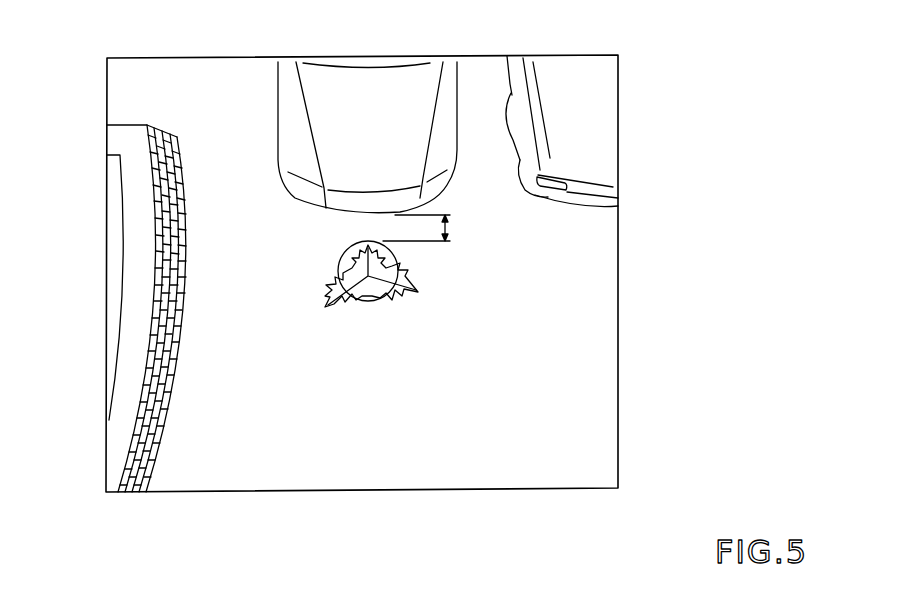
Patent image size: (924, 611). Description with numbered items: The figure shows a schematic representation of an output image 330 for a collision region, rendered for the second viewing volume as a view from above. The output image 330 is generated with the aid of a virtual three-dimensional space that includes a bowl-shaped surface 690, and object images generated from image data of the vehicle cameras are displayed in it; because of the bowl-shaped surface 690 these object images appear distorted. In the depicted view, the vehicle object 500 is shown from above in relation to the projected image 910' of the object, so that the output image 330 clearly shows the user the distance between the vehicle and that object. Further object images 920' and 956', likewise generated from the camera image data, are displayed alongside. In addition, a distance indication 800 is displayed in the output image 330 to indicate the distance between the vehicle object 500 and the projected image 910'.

The output image 330 is at (540, 250).
The vehicle object 500 is at (295, 199).
The surface 690 is at (493, 485).
The distance indication 800 is at (461, 241).
The projected image of the object 910' is at (334, 296).
The object image 920' is at (107, 308).
The object image 956' is at (618, 131).